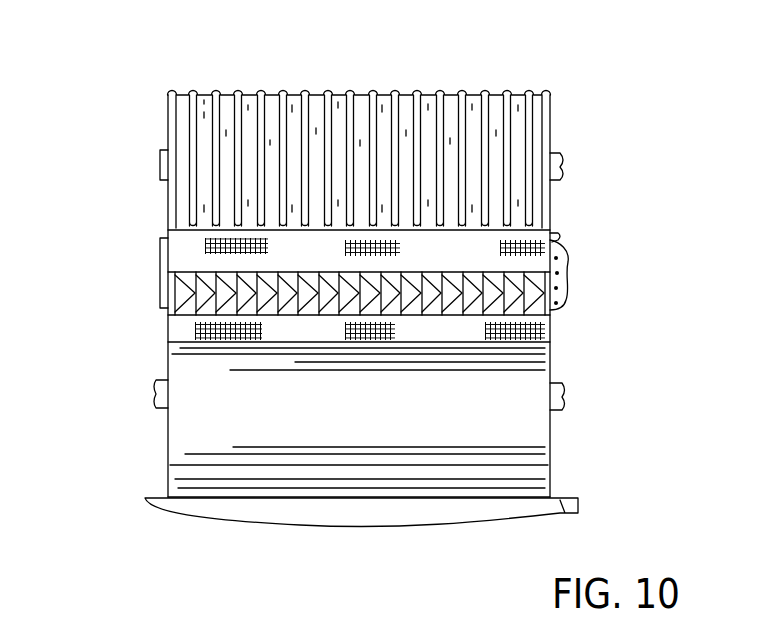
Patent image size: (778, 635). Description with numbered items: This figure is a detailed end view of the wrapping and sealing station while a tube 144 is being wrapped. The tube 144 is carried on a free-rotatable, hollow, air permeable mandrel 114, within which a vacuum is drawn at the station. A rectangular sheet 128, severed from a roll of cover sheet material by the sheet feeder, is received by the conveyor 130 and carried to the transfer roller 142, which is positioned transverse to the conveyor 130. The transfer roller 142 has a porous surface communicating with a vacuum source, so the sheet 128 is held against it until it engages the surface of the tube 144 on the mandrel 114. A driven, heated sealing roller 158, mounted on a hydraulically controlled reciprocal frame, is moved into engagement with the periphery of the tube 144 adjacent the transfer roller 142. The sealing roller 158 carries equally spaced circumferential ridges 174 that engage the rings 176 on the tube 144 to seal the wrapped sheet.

The mandrel 114 is at (556, 238).
The rectangular sheet 128 is at (560, 270).
The conveyor 130 is at (560, 500).
The transfer roller 142 is at (180, 418).
The tube 144 is at (205, 293).
The sealing roller 158 is at (405, 156).
The circumferential ridge 174 is at (224, 100).
The ring 176 is at (232, 290).